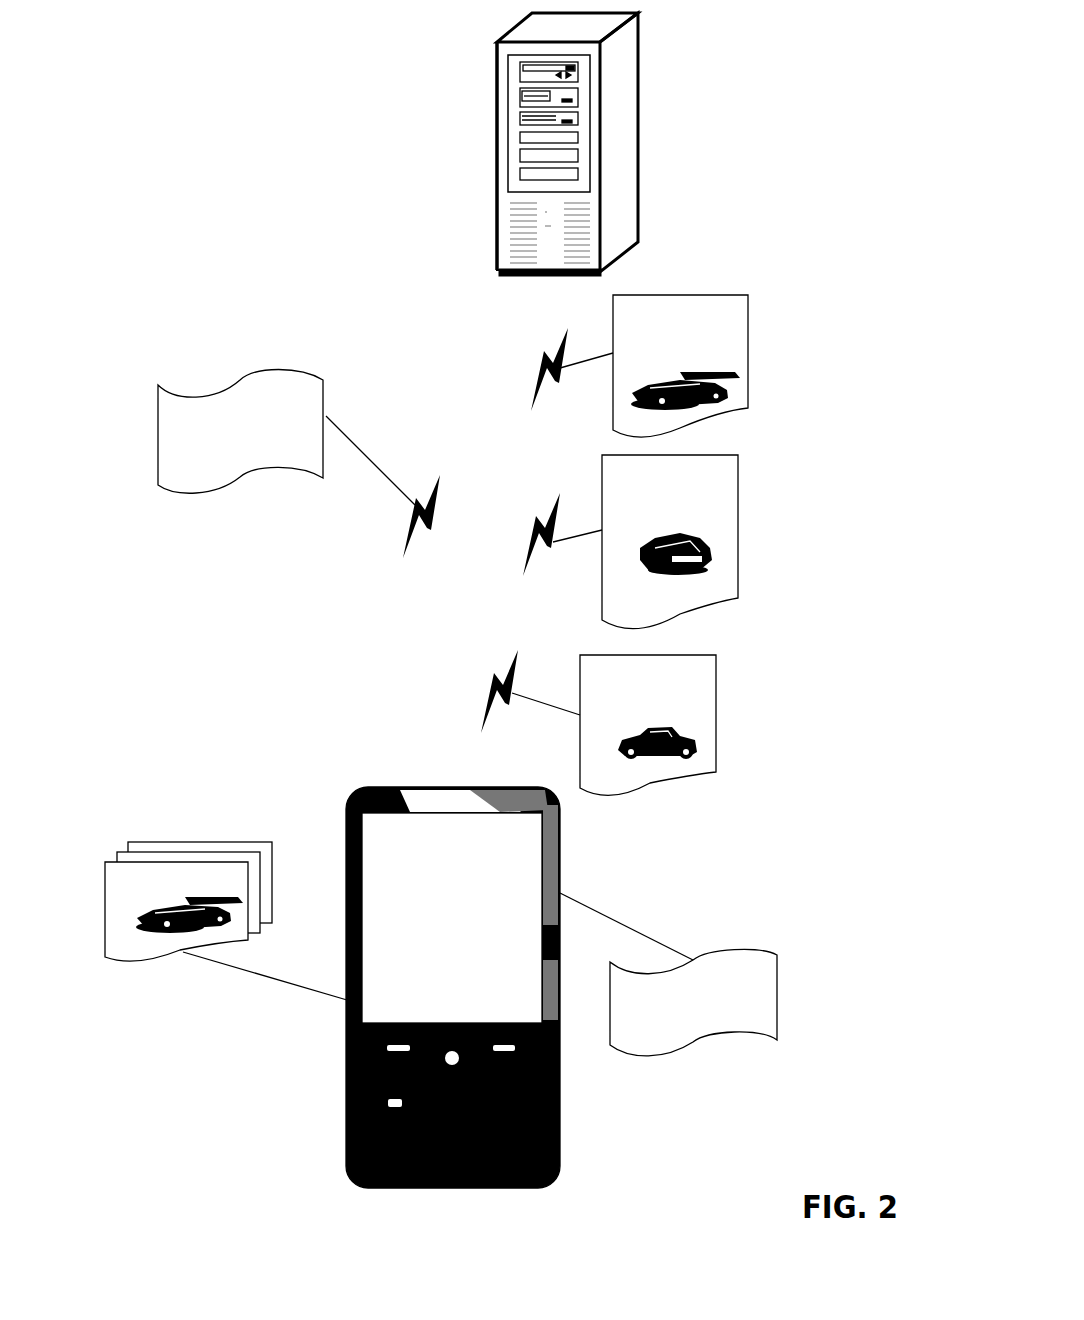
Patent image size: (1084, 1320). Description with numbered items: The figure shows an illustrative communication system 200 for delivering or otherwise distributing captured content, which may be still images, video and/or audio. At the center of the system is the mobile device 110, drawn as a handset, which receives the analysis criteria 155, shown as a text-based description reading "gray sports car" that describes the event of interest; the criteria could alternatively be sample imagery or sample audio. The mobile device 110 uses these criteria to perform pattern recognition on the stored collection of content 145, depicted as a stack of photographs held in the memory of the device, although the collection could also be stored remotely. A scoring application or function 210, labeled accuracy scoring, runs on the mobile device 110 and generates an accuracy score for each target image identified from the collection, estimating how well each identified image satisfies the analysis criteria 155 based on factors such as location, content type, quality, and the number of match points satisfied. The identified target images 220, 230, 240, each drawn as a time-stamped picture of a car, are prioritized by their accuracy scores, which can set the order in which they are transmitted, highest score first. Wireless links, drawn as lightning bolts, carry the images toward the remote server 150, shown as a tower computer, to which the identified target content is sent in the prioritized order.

The communication system 200 is at (833, 1180).
The remote server 150 is at (640, 123).
The analysis criteria 155 is at (243, 380).
The target image 220 is at (748, 364).
The target image 230 is at (738, 540).
The target image 240 is at (716, 727).
The stored collection of content 145 is at (190, 842).
The mobile device 110 is at (472, 931).
The scoring application or function 210 is at (760, 952).